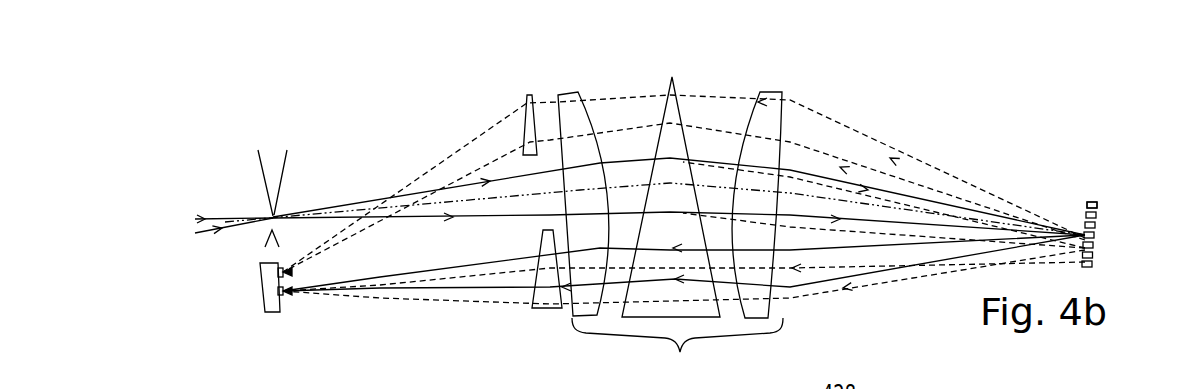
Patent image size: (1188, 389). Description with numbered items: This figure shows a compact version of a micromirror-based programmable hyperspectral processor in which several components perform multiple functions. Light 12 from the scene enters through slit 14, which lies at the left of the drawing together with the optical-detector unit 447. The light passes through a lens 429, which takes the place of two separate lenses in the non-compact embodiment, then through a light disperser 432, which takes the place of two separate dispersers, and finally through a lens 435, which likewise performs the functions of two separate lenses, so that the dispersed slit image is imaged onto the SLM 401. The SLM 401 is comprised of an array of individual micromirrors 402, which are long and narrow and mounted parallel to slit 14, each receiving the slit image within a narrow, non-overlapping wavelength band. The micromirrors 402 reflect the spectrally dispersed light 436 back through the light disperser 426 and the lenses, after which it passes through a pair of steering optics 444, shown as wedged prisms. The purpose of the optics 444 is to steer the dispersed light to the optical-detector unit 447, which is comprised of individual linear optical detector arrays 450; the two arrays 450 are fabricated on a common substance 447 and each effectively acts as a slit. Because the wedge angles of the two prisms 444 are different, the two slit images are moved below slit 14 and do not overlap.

The light 12 is at (233, 220).
The slit 14 is at (278, 215).
The optical-detector unit 447 is at (262, 288).
The linear optical detector array 450 is at (285, 298).
The steering optics 444 is at (525, 95).
The light disperser 426 is at (714, 206).
The lens 429 is at (578, 95).
The light disperser 432 is at (678, 78).
The lens 435 is at (783, 97).
The light 436 is at (937, 166).
The SLM 401 is at (1069, 198).
The micromirrors 402 is at (1098, 203).